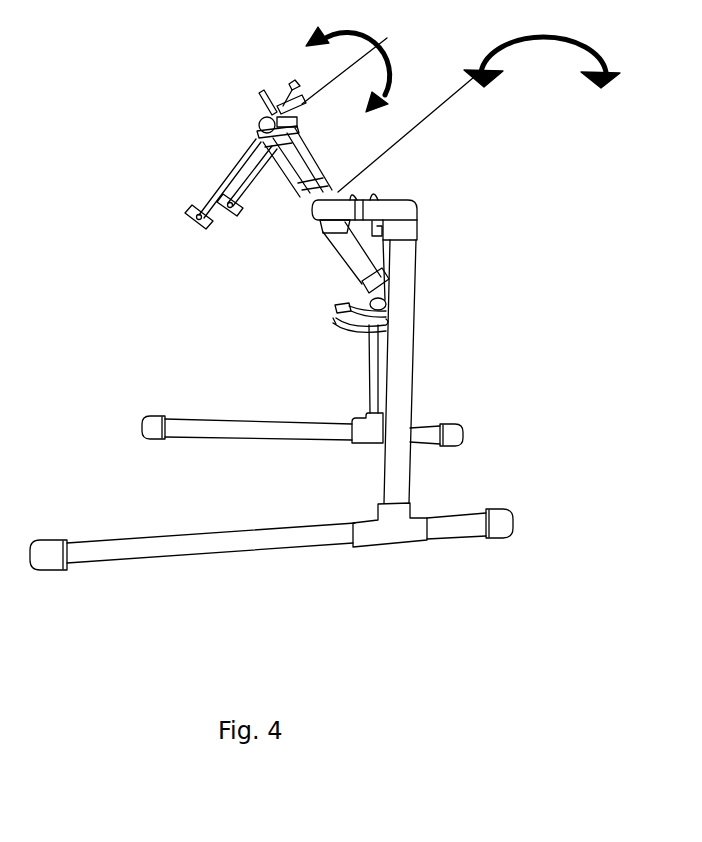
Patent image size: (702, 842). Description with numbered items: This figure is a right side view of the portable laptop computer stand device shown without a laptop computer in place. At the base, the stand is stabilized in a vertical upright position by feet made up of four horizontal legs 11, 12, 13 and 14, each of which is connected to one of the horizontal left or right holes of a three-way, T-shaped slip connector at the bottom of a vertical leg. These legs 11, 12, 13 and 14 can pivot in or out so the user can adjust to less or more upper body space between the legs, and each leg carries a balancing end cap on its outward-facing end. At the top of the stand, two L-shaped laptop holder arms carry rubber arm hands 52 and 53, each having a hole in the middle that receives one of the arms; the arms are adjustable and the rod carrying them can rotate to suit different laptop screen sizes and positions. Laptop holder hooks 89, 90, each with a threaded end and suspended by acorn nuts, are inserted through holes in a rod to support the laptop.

The horizontal leg 11 is at (265, 428).
The horizontal leg 12 is at (177, 547).
The horizontal leg 13 is at (424, 428).
The horizontal leg 14 is at (453, 528).
The rubber arm hand 52 is at (243, 216).
The rubber arm hand 53 is at (184, 220).
The laptop holder hook 89 is at (340, 305).
The laptop holder hook 90 is at (345, 324).